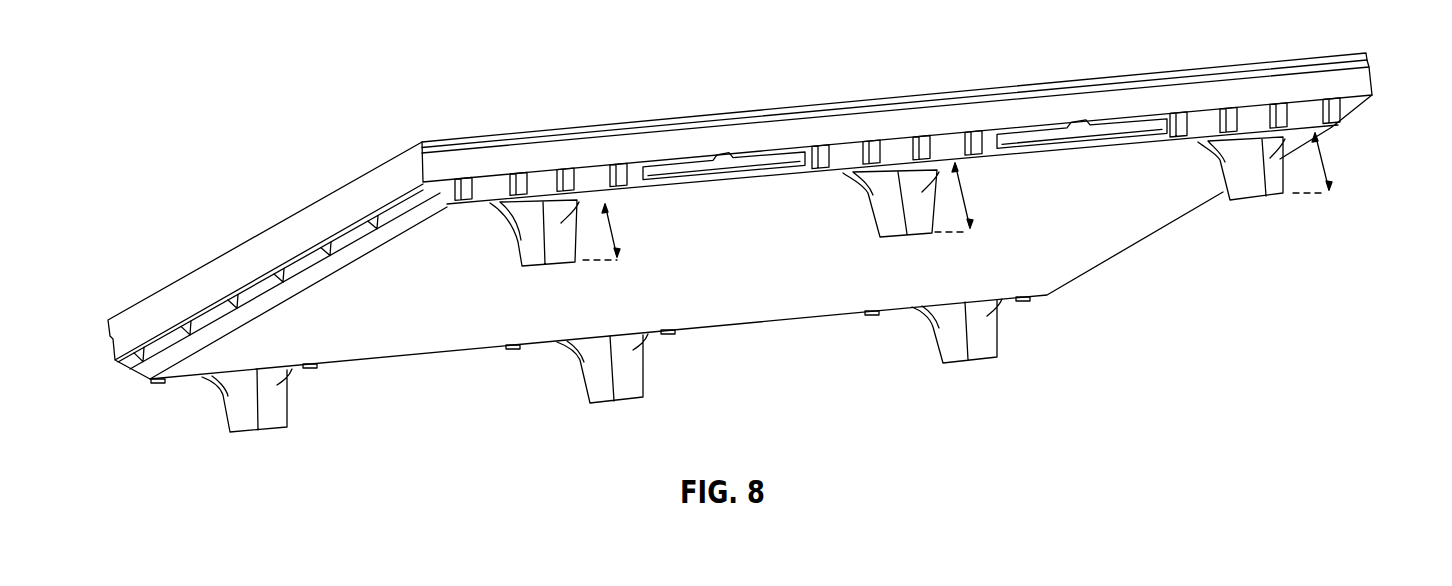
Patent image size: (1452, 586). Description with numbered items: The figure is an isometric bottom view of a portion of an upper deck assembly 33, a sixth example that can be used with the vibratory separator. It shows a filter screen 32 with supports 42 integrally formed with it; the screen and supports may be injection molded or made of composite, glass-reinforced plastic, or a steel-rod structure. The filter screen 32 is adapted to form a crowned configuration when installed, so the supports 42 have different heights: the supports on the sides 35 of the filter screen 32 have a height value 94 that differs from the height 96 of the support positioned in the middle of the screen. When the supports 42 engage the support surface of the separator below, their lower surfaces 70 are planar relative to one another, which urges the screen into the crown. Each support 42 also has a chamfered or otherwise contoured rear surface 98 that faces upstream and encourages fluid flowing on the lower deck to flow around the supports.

The upper deck assembly 33 is at (468, 61).
The filter screen 32 is at (800, 108).
The sides 35 is at (348, 193).
The height value 94 is at (613, 232).
The height 96 is at (967, 203).
The rear surface 98 is at (535, 247).
The lower surfaces 70 is at (250, 432).
The supports 42 is at (957, 337).